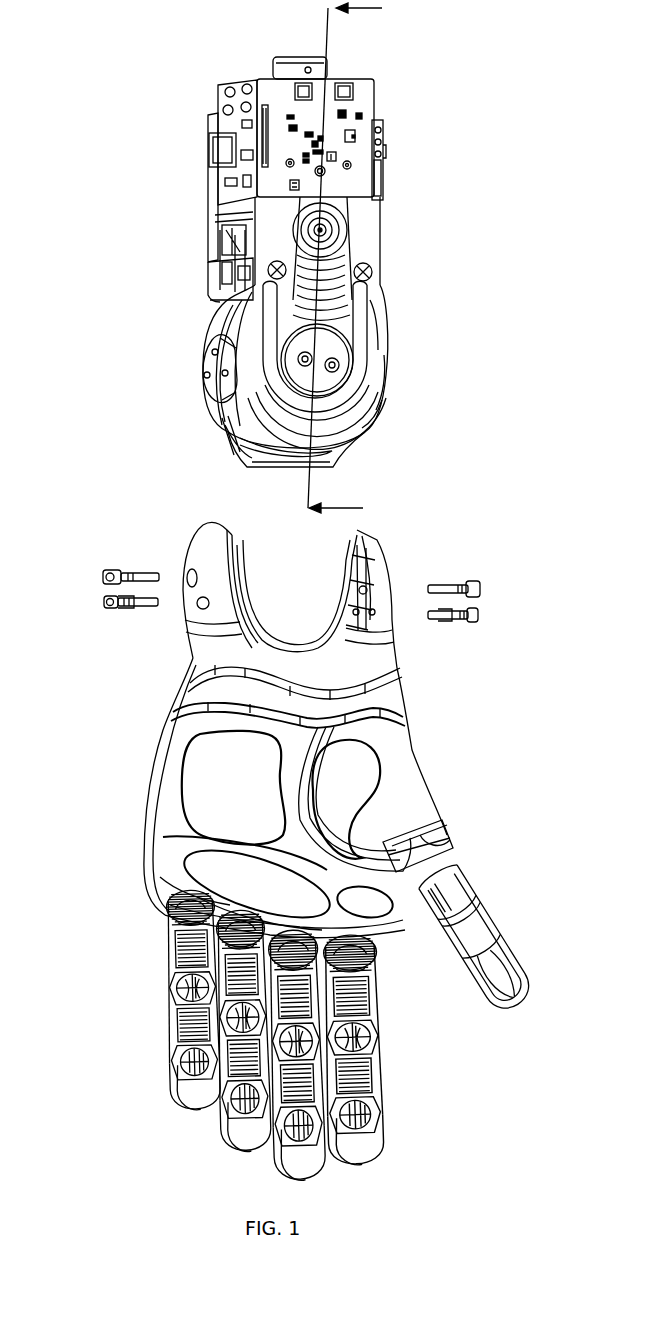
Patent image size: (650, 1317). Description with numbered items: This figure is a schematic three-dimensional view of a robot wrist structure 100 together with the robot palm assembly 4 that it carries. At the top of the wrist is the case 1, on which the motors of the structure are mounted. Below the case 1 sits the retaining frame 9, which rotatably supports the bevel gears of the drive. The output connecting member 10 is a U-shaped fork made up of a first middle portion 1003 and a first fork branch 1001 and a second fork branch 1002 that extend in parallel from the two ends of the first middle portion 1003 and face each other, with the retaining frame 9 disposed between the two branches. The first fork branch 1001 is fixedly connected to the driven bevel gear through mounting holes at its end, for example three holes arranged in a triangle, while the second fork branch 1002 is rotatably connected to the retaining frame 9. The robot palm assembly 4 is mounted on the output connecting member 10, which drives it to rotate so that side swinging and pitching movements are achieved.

The robot wrist structure 100 is at (160, 72).
The case 1 is at (257, 203).
The retaining frame 9 is at (243, 323).
The first fork branch 1001 is at (212, 385).
The second fork branch 1002 is at (373, 417).
The first middle portion 1003 is at (320, 457).
The output connecting member 10 is at (290, 458).
The robot palm assembly 4 is at (232, 785).